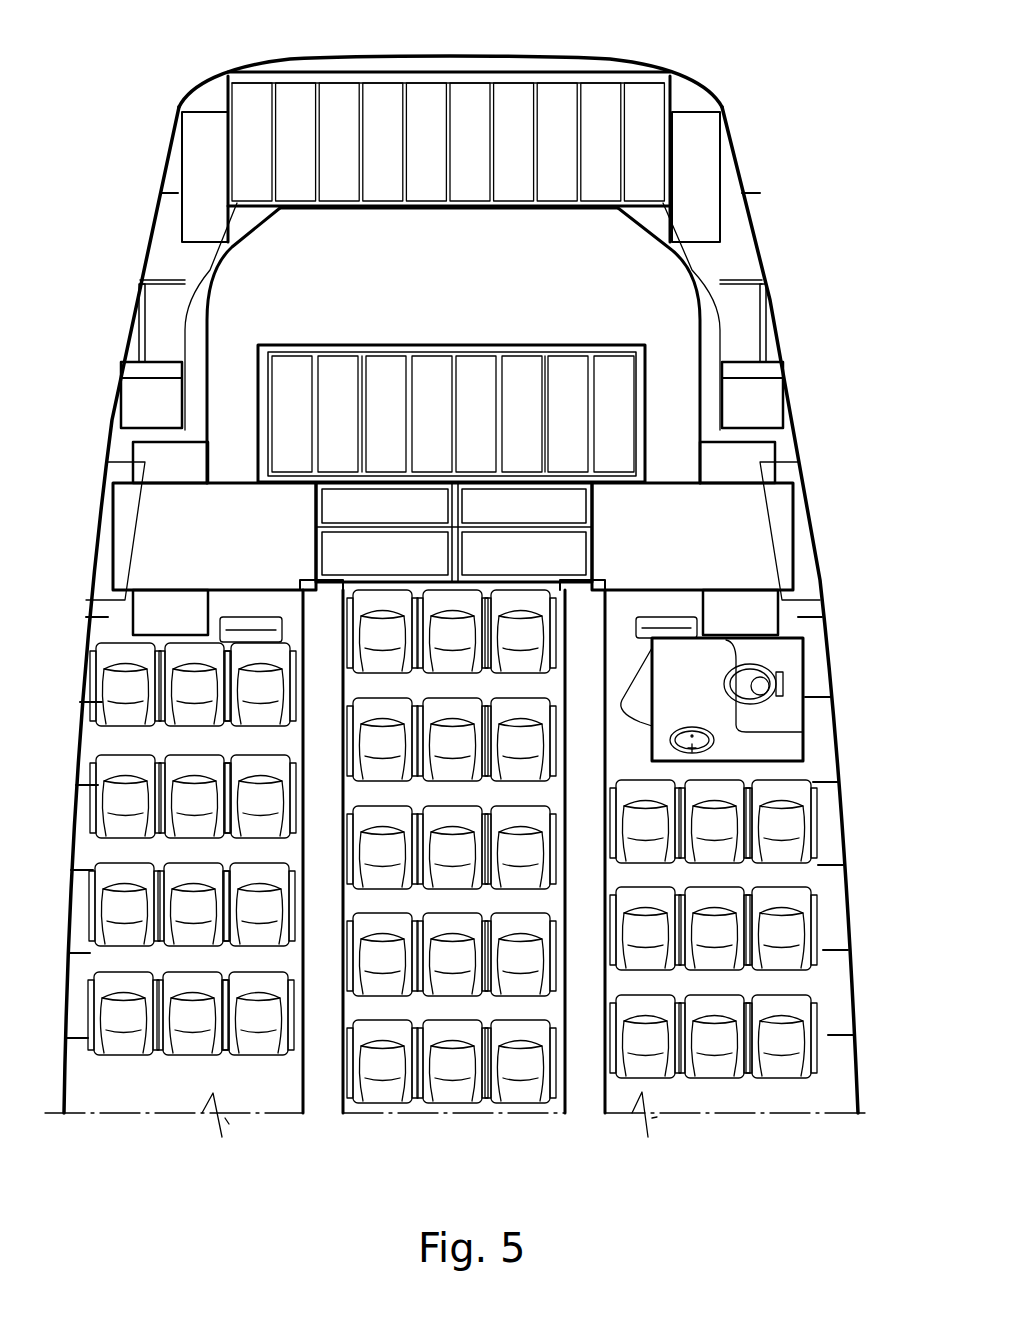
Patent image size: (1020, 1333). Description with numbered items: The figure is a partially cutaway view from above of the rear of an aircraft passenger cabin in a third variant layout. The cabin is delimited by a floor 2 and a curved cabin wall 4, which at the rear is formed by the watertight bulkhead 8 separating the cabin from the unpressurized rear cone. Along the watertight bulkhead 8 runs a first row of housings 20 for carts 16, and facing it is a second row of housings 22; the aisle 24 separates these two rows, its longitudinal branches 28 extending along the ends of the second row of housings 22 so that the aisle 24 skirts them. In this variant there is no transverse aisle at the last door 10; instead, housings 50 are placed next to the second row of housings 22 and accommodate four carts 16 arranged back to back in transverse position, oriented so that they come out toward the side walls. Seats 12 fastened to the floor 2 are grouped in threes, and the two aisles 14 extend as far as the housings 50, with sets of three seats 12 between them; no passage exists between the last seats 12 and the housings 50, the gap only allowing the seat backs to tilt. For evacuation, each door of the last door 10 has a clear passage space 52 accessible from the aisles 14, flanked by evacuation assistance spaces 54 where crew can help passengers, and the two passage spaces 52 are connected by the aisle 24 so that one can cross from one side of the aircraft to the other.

The floor 2 is at (158, 1099).
The cabin wall 4 is at (832, 668).
The watertight bulkhead 8 is at (412, 57).
The last door 10 is at (105, 525).
The seats 12 is at (458, 1092).
The aisles 14 is at (326, 1097).
The carts 16 is at (592, 511).
The housings 20 is at (515, 60).
The second row of housings 22 is at (258, 402).
The aisle 24 is at (450, 282).
The branches 28 is at (232, 412).
The housings 50 is at (316, 525).
The passage space 52 is at (110, 556).
The evacuation assistance space 54 is at (140, 455).